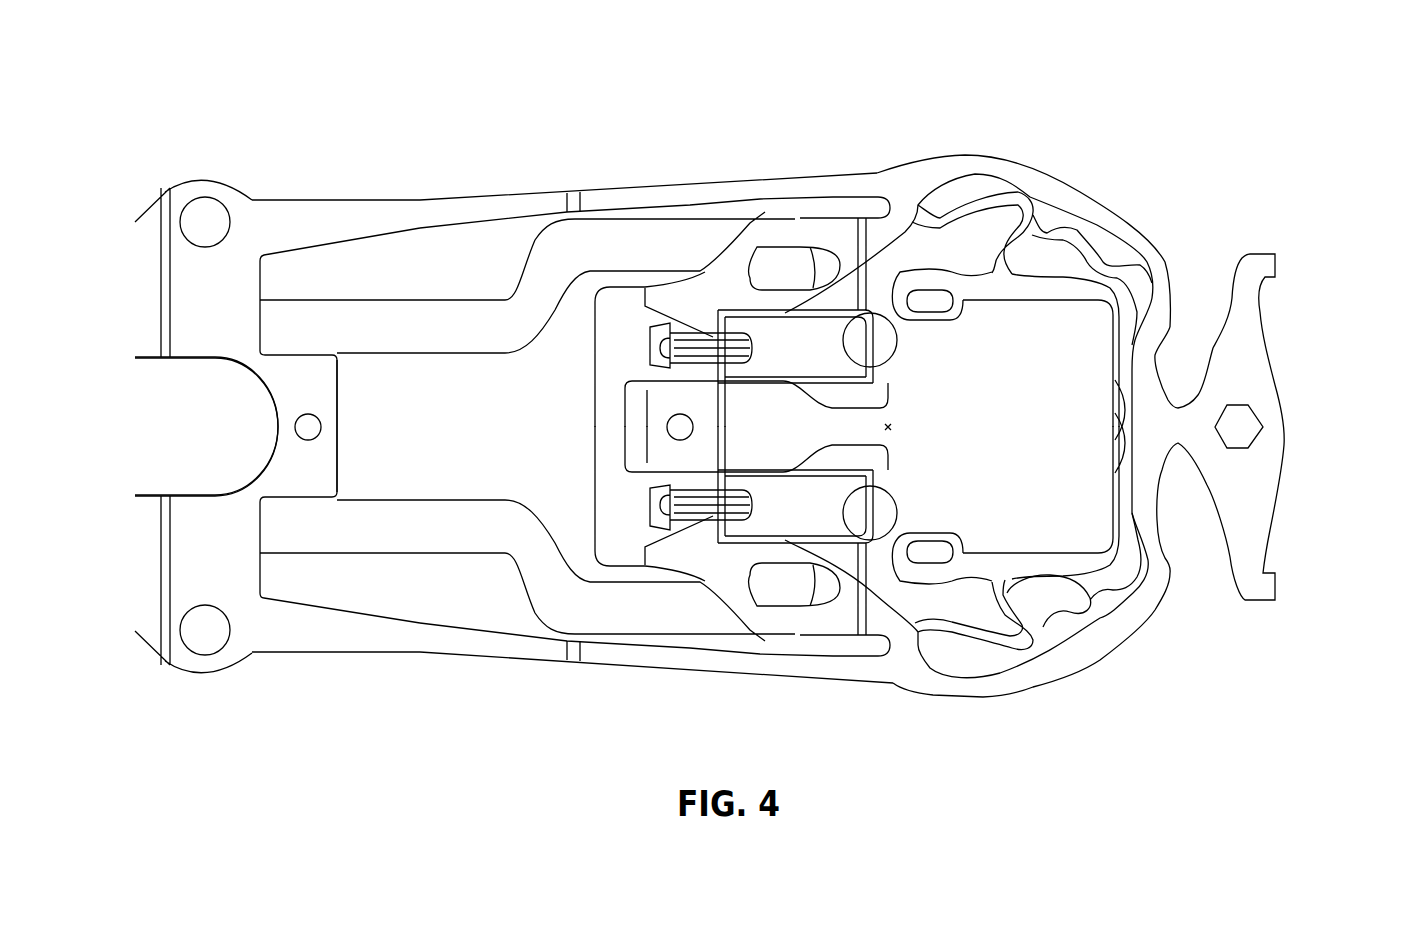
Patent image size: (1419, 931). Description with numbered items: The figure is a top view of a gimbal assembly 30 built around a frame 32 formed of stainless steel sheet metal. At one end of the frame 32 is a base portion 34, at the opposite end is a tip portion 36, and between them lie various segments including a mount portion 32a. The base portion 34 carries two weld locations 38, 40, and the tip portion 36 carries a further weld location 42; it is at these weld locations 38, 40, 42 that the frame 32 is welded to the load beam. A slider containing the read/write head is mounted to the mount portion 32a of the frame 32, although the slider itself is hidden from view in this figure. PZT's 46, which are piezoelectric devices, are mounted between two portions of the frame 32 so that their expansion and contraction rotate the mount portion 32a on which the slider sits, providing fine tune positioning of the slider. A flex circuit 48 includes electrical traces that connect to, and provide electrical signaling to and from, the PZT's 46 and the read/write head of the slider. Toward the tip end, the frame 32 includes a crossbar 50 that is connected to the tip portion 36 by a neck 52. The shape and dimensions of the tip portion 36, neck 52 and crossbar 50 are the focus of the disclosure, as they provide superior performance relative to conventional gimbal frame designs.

The gimbal assembly 30 is at (967, 155).
The frame 32 is at (913, 340).
The mount portion 32a is at (1024, 443).
The base portion 34 is at (150, 285).
The tip portion 36 is at (1285, 426).
The weld location 38 is at (212, 222).
The weld location 40 is at (210, 638).
The weld location 42 is at (1241, 427).
The PZT's 46 is at (745, 483).
The flex circuit 48 is at (367, 357).
The crossbar 50 is at (1142, 368).
The neck 52 is at (1176, 436).